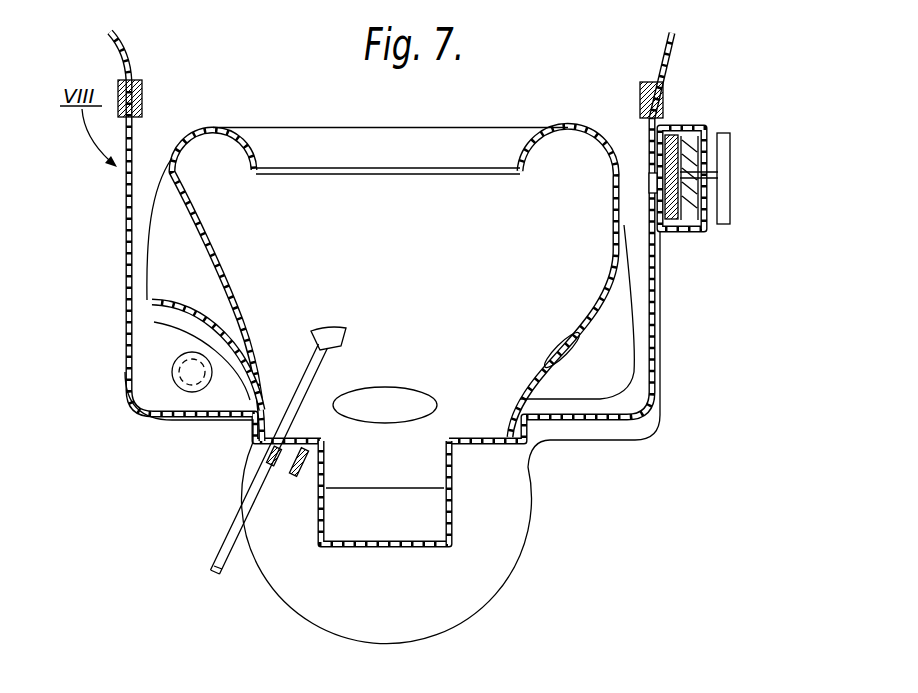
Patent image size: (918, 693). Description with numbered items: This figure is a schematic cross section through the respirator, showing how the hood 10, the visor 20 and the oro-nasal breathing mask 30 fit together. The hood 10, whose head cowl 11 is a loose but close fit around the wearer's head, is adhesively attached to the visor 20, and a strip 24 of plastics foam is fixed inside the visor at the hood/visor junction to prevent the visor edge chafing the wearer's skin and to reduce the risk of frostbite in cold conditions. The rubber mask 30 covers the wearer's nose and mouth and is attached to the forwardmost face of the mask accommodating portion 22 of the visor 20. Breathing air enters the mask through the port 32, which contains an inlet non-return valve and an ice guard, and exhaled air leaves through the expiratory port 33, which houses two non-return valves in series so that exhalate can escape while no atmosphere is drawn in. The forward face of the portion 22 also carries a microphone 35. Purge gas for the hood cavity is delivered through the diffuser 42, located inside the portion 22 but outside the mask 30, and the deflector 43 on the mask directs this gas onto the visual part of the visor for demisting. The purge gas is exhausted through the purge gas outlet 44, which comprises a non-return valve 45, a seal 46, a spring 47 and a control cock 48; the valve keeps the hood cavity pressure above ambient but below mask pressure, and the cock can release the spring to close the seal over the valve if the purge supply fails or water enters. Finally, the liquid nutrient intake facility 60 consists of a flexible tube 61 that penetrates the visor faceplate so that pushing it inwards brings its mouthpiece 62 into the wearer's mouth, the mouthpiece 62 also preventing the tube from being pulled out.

The hood 10 is at (112, 51).
The head cowl 11 is at (669, 50).
The visor 20 is at (127, 215).
The mask accommodating portion 22 is at (196, 421).
The strip 24 is at (140, 98).
The oro-nasal breathing mask 30 is at (573, 127).
The port 32 is at (556, 352).
The port 33 is at (381, 394).
The microphone 35 is at (438, 520).
The diffuser 42 is at (173, 378).
The deflector 43 is at (166, 311).
The purge gas outlet 44 is at (700, 241).
The non-return valve 45 is at (684, 156).
The seal 46 is at (683, 225).
The spring 47 is at (690, 136).
The control cock 48 is at (727, 224).
The liquid nutrient intake facility 60 is at (211, 558).
The flexible tube 61 is at (263, 493).
The mouthpiece 62 is at (337, 329).